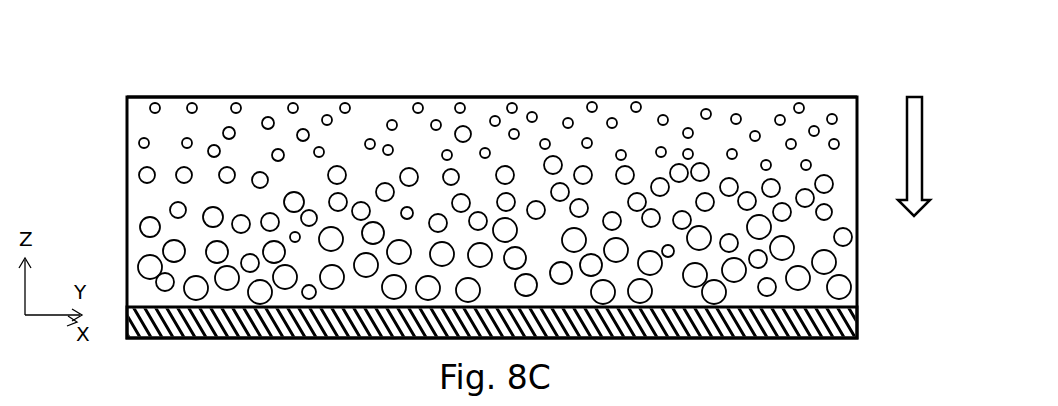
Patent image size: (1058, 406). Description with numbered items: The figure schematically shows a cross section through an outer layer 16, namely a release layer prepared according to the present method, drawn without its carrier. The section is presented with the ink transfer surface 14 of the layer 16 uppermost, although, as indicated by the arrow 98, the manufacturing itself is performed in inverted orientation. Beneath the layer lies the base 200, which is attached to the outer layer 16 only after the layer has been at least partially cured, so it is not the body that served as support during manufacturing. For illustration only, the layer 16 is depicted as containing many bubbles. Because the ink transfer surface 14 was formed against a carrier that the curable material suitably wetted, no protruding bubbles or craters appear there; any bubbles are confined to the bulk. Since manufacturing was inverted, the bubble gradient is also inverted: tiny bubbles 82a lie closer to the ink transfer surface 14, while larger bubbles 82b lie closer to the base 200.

The ink transfer surface 14 is at (207, 96).
The outer layer 16 is at (783, 81).
The tiny bubbles 82a is at (634, 102).
The larger bubbles 82b is at (838, 284).
The arrow 98 is at (900, 156).
The base 200 is at (861, 325).